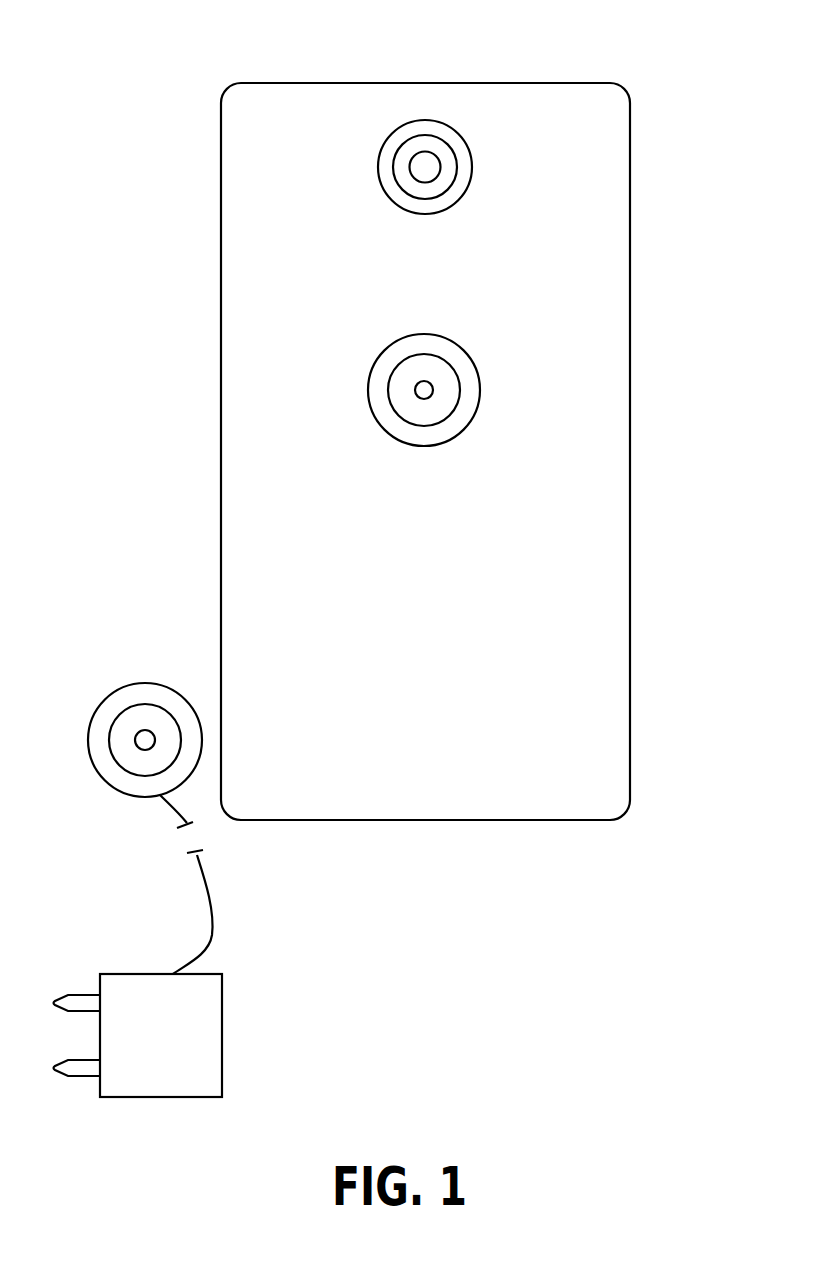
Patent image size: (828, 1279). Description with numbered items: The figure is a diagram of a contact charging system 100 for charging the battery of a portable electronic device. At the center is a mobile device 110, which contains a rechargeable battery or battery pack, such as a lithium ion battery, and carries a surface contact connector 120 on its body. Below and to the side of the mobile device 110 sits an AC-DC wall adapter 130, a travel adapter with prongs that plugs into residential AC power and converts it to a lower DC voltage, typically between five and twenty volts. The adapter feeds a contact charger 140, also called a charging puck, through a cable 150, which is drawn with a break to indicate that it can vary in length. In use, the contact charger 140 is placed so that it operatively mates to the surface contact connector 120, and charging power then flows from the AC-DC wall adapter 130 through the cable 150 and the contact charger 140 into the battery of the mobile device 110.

The contact charging system 100 is at (660, 81).
The mobile device 110 is at (560, 259).
The surface contact connector 120 is at (480, 392).
The AC-DC wall adapter 130 is at (222, 1012).
The contact charger 140 is at (125, 683).
The cable 150 is at (197, 882).